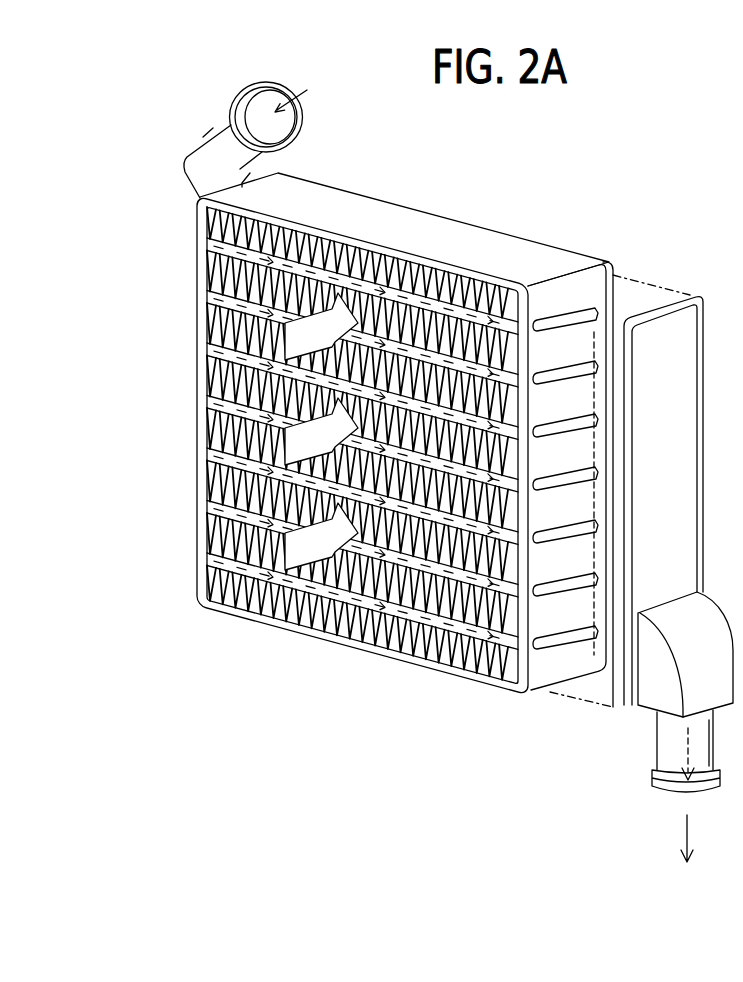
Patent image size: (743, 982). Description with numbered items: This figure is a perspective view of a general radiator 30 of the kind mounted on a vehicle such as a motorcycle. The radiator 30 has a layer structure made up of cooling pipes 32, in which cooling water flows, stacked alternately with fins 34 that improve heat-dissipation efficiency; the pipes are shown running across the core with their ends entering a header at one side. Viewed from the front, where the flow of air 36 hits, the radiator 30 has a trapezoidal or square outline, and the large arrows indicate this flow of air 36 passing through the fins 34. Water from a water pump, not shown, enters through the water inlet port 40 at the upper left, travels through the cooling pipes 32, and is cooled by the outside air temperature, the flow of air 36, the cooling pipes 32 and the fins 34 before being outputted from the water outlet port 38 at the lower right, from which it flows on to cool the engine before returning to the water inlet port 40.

The radiator 30 is at (493, 200).
The cooling pipes 32 is at (592, 518).
The fins 34 is at (320, 623).
The flow of air 36 is at (295, 442).
The water outlet port 38 is at (676, 794).
The water inlet port 40 is at (278, 122).